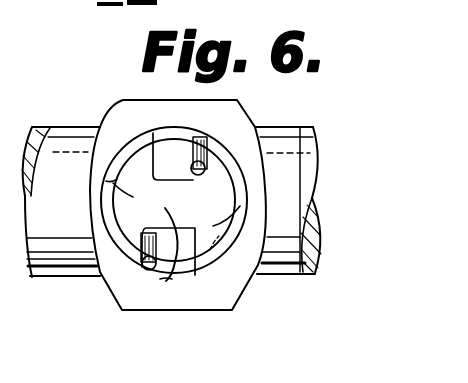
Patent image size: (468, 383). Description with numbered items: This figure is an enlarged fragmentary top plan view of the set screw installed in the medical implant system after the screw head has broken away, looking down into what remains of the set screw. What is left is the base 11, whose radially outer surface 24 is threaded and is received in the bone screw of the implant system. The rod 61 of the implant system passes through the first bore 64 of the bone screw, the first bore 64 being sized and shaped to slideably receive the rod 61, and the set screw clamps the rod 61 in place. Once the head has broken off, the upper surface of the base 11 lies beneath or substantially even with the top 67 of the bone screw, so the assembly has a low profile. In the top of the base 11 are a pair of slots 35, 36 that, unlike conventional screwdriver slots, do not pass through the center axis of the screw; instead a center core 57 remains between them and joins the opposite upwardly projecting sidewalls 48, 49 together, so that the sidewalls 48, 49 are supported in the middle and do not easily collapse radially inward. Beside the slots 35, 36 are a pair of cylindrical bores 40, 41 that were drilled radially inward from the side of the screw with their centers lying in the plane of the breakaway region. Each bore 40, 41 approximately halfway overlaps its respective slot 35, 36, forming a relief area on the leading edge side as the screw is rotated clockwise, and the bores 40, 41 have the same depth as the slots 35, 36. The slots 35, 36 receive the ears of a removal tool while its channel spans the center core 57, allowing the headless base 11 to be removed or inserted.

The base 11 is at (135, 198).
The radially outer surface 24 is at (208, 252).
The slot 35 is at (120, 175).
The slot 36 is at (181, 264).
The bore 40 is at (192, 181).
The bore 41 is at (168, 279).
The sidewall 48 is at (137, 180).
The sidewall 49 is at (252, 230).
The center core 57 is at (163, 266).
The rod 61 is at (53, 128).
The first bore 64 is at (117, 179).
The top 67 is at (241, 127).